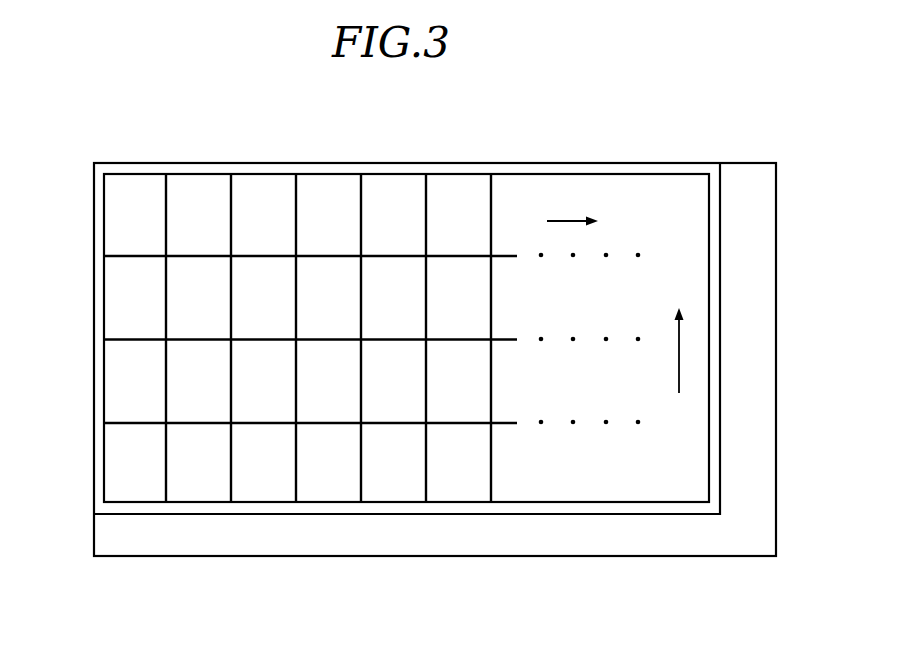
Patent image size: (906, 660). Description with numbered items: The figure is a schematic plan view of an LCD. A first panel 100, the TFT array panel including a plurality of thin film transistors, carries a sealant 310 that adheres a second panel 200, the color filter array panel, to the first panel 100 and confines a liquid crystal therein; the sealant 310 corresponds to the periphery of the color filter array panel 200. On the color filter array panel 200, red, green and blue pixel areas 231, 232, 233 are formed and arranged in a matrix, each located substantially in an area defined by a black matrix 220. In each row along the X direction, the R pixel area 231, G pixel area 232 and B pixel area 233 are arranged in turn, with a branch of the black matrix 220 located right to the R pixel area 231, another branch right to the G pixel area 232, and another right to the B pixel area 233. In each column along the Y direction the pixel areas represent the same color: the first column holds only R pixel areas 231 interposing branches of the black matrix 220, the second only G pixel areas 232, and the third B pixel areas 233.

The first panel 100 is at (681, 534).
The second panel 200 is at (662, 172).
The sealant 310 is at (586, 506).
The black matrix 220 is at (233, 198).
The R pixel area 231 is at (130, 188).
The G pixel area 232 is at (199, 188).
The B pixel area 233 is at (287, 190).